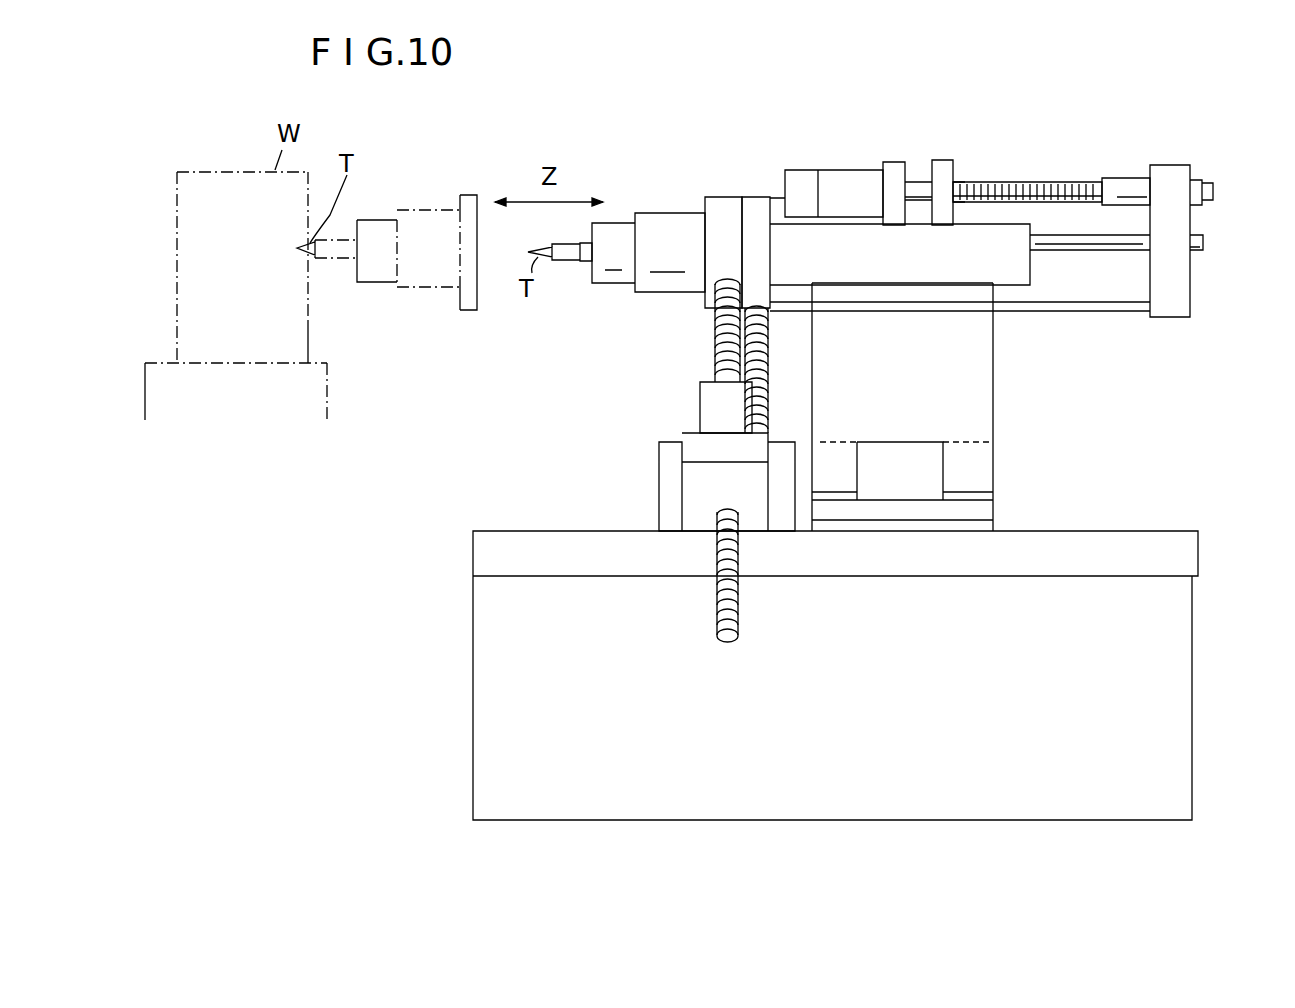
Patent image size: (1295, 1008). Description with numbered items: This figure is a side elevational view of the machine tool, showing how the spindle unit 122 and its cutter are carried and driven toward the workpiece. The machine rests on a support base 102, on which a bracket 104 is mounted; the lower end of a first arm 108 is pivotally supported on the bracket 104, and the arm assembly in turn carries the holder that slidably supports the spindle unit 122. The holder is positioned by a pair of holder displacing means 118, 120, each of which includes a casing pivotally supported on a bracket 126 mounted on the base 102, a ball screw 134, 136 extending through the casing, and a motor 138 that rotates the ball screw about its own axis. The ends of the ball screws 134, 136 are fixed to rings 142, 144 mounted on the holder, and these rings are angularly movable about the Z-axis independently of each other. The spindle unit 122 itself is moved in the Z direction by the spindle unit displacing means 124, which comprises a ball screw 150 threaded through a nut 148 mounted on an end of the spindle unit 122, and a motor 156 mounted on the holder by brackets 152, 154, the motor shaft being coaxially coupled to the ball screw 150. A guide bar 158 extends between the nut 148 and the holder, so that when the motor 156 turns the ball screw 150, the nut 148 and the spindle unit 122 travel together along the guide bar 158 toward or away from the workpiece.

The support base 102 is at (1178, 662).
The bracket 104 is at (915, 497).
The first arm 108 is at (978, 383).
The holder displacing means 118 is at (660, 330).
The holder displacing means 120 is at (712, 372).
The spindle unit 122 is at (665, 212).
The spindle unit displacing means 124 is at (942, 158).
The bracket 126 is at (670, 465).
The ball screw 134 is at (737, 605).
The ball screw 136 is at (765, 357).
The motor 138 is at (737, 402).
The ring 142 is at (724, 207).
The ring 144 is at (760, 210).
The nut 148 is at (1173, 182).
The ball screw 150 is at (1058, 188).
The bracket 152 is at (896, 170).
The bracket 154 is at (950, 172).
The motor 156 is at (845, 190).
The guide bar 158 is at (1112, 242).